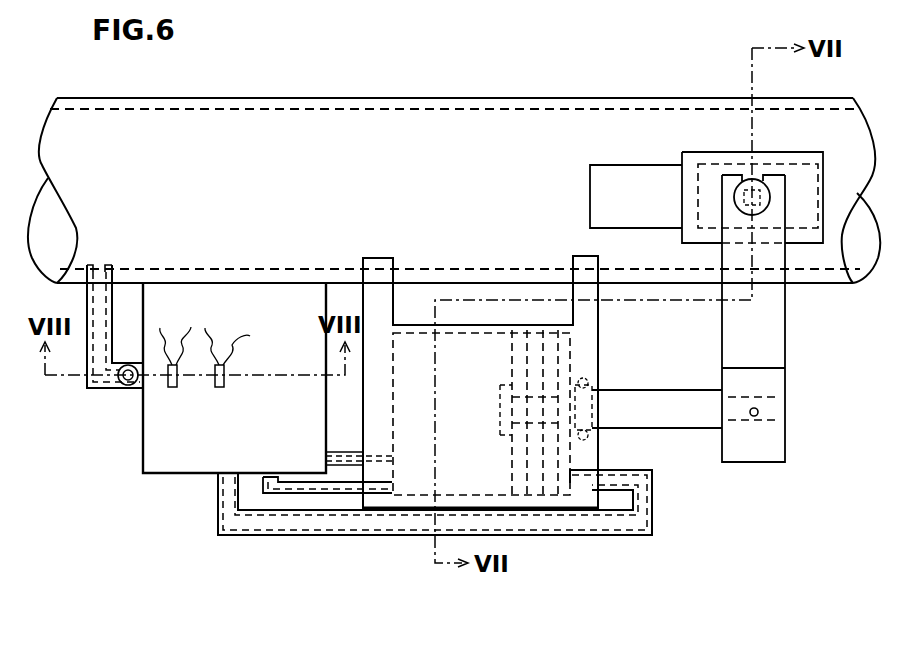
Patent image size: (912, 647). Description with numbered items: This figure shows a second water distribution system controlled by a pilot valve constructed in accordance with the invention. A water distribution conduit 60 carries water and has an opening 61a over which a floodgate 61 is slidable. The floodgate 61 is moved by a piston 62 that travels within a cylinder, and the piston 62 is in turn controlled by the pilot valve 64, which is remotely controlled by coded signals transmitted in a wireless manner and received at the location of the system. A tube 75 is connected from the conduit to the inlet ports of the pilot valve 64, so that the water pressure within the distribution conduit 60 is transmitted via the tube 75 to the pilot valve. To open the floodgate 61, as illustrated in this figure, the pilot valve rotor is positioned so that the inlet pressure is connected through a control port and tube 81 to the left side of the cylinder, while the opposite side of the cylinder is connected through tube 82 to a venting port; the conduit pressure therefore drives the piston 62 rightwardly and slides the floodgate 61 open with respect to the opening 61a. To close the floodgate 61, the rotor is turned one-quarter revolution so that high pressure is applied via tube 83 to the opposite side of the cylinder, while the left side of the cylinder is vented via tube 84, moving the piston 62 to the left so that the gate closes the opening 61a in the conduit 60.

The water distribution conduit 60 is at (353, 108).
The floodgate 61 is at (715, 149).
The opening 61a is at (623, 172).
The piston 62 is at (525, 453).
The pilot valve 64 is at (157, 463).
The tube 75 is at (93, 392).
The tube 81 is at (338, 495).
The tube 82 is at (648, 470).
The tube 83 is at (620, 534).
The tube 84 is at (350, 498).